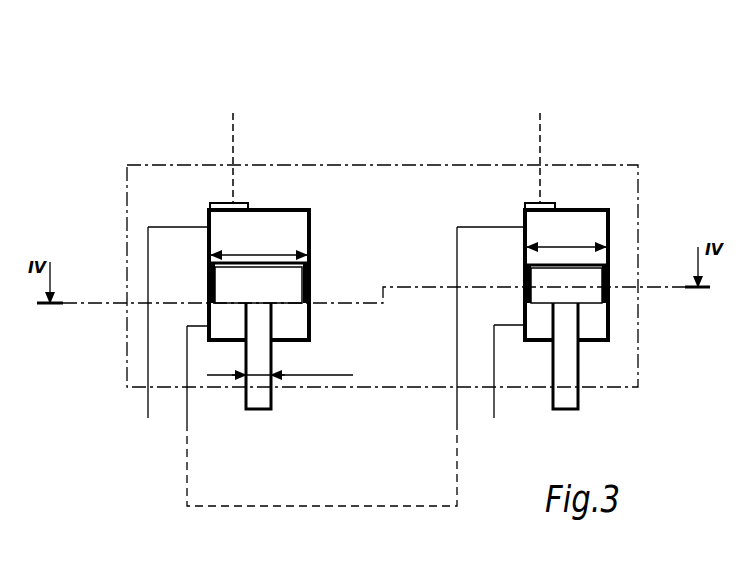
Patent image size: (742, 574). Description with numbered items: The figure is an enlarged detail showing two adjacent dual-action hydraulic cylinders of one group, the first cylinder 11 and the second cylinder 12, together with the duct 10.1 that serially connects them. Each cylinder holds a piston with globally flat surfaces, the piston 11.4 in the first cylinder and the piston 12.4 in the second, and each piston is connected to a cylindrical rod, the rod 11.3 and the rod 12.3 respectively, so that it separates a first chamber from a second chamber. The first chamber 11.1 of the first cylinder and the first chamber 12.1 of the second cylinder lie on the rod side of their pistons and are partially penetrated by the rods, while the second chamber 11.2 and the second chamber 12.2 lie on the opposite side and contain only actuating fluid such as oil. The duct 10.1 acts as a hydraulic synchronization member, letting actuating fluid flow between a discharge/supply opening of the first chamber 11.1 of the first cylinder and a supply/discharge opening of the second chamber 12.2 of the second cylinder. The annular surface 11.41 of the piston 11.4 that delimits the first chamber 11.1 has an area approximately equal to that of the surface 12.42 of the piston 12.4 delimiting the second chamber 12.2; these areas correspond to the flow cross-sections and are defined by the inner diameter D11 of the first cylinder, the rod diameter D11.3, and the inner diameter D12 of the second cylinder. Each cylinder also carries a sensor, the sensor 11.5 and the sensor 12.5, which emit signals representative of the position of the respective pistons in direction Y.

The duct 10.1 is at (342, 506).
The first cylinder 11 is at (283, 142).
The first chamber 11.1 is at (237, 318).
The second chamber 11.2 is at (268, 228).
The rod 11.3 is at (259, 402).
The piston 11.4 is at (258, 285).
The surface 11.41 is at (288, 309).
The sensor 11.5 is at (215, 205).
The second cylinder 12 is at (622, 147).
The first chamber 12.1 is at (598, 321).
The second chamber 12.2 is at (596, 217).
The rod 12.3 is at (565, 400).
The piston 12.4 is at (566, 285).
The surface 12.42 is at (553, 262).
The sensor 12.5 is at (530, 205).
The inner diameter of the cylinder D11 is at (259, 244).
The diameter of the rod D11.3 is at (280, 362).
The inner diameter of the cylinder D12 is at (566, 233).